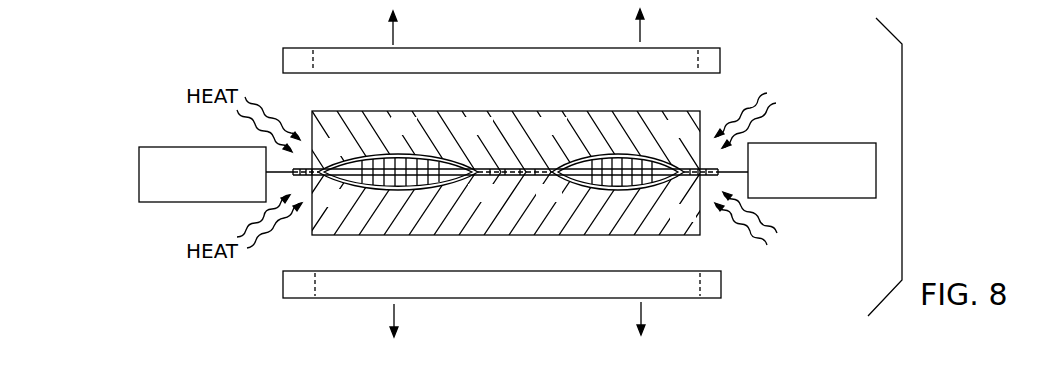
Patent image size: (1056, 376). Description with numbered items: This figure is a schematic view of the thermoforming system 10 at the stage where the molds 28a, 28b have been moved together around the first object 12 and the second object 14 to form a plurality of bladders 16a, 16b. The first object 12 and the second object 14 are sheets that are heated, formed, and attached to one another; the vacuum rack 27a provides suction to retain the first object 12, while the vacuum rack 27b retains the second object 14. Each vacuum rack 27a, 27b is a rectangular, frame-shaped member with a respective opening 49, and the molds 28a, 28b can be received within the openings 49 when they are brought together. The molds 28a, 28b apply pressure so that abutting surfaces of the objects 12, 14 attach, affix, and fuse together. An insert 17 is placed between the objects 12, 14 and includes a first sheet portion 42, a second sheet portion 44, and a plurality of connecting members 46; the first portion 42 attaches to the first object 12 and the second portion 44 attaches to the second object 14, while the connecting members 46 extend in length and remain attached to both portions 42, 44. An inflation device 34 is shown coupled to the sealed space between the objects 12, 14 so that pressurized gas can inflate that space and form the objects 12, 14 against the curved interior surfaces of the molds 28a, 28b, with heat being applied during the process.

The thermoforming system 10 is at (818, 62).
The first object 12 is at (688, 166).
The second object 14 is at (688, 180).
The bladder 16a is at (436, 153).
The bladder 16b is at (599, 151).
The insert 17 is at (446, 178).
The vacuum rack 27a is at (720, 58).
The vacuum rack 27b is at (721, 283).
The mold 28a is at (520, 110).
The mold 28b is at (523, 232).
The inflation device 34 is at (198, 148).
The first sheet portion 42 is at (372, 158).
The second sheet portion 44 is at (375, 188).
The connecting members 46 is at (396, 160).
The opening 49 is at (313, 62).